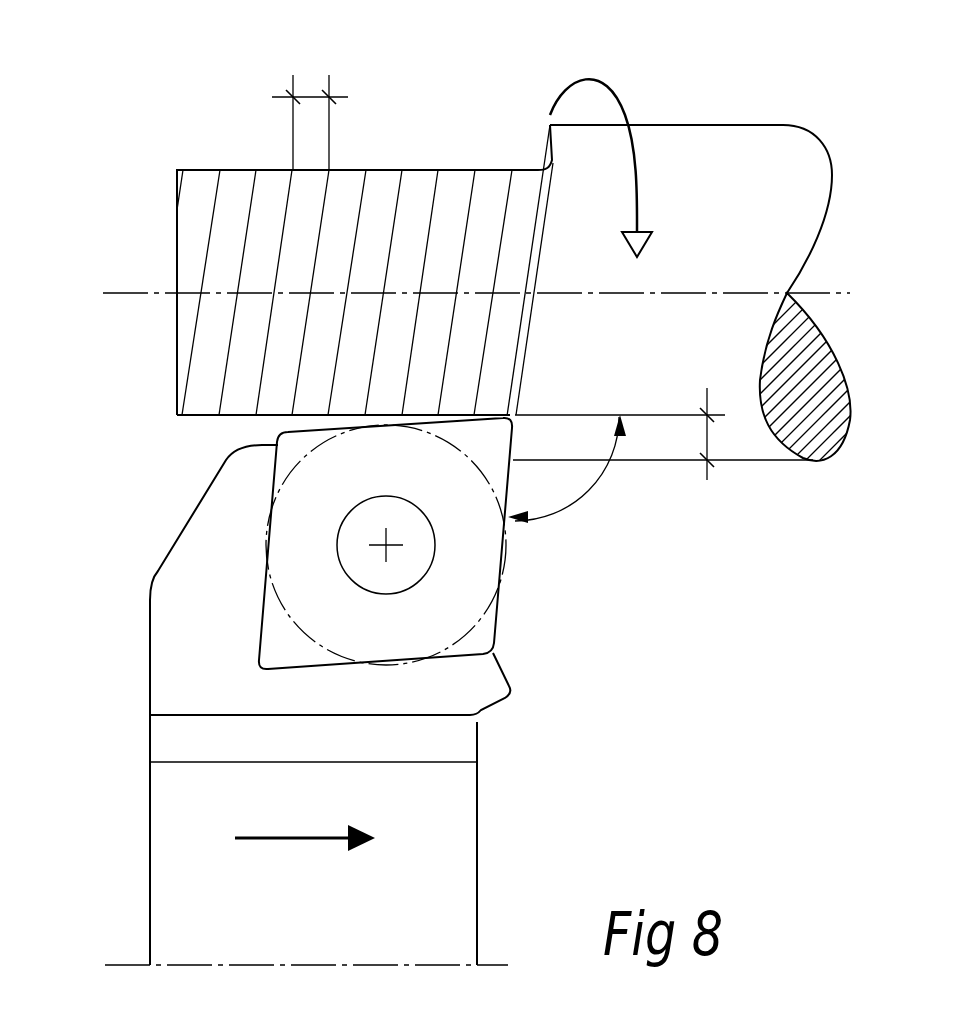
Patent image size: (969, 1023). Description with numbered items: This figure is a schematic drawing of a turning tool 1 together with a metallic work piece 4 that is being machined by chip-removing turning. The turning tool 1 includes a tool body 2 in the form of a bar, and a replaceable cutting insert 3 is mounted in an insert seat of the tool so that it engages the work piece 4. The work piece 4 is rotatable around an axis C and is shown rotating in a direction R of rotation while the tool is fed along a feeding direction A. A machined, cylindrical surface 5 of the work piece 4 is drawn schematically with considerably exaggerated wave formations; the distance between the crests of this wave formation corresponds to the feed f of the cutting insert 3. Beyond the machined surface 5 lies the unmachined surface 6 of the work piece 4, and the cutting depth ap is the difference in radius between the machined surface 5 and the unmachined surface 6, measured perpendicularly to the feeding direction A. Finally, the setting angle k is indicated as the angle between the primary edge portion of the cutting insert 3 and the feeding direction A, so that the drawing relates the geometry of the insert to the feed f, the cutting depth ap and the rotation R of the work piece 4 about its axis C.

The turning tool 1 is at (122, 632).
The tool body 2 is at (172, 813).
The cutting insert 3 is at (502, 562).
The work piece 4 is at (692, 105).
The machined cylindrical surface 5 is at (228, 170).
The unmachined surface 6 is at (755, 148).
The feeding direction A is at (307, 838).
The axis C is at (140, 293).
The direction of rotation R is at (633, 157).
The feed f is at (310, 120).
The cutting depth ap is at (663, 434).
The setting angle k is at (567, 469).